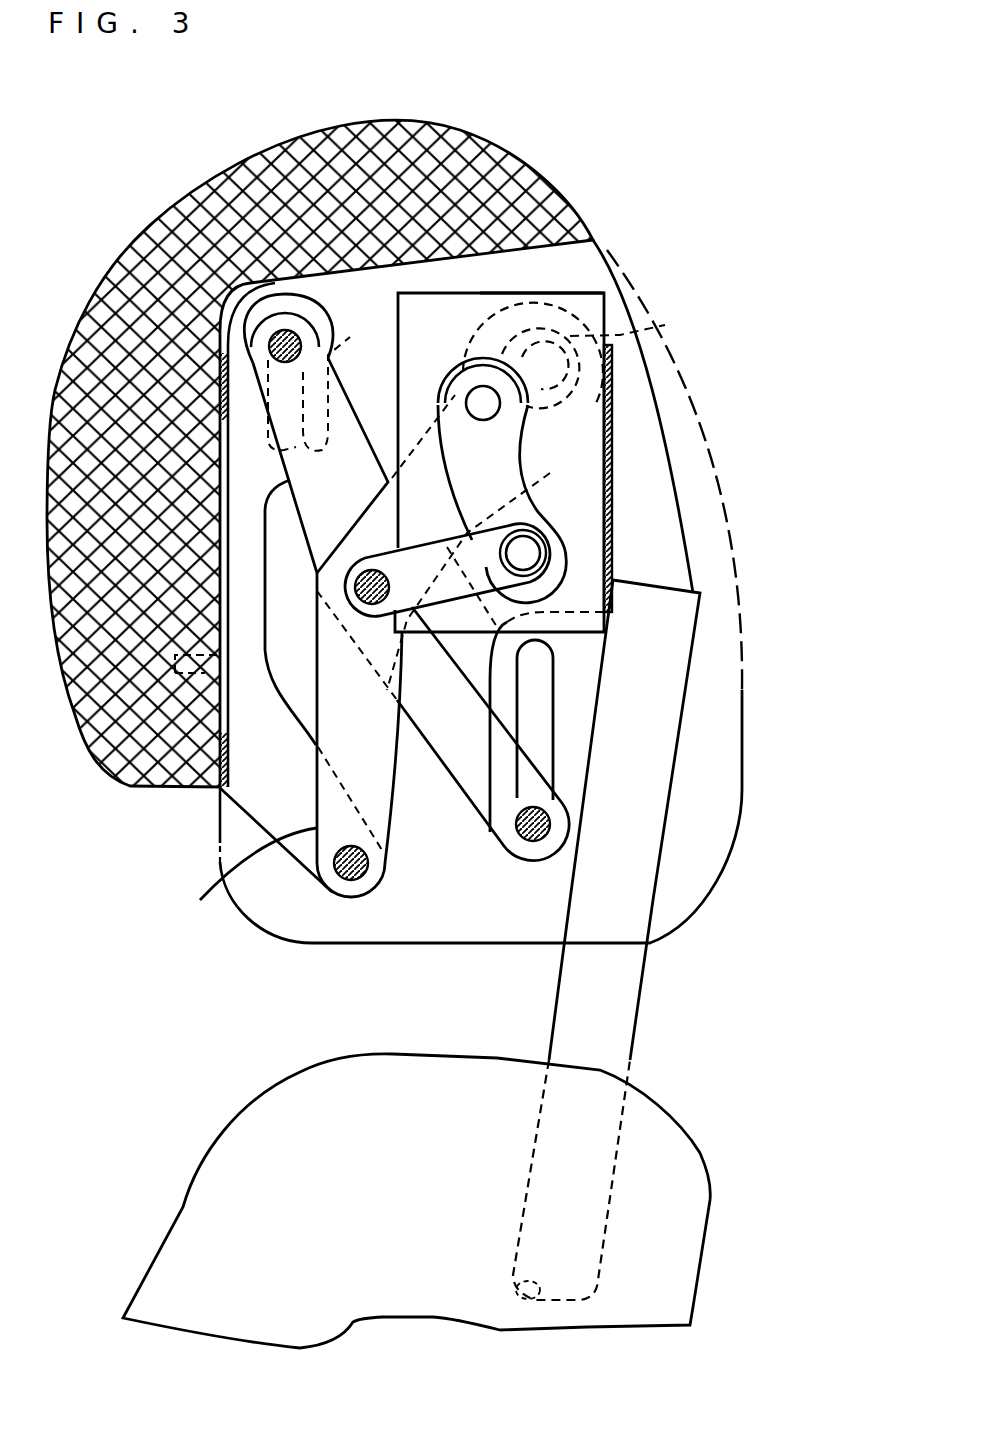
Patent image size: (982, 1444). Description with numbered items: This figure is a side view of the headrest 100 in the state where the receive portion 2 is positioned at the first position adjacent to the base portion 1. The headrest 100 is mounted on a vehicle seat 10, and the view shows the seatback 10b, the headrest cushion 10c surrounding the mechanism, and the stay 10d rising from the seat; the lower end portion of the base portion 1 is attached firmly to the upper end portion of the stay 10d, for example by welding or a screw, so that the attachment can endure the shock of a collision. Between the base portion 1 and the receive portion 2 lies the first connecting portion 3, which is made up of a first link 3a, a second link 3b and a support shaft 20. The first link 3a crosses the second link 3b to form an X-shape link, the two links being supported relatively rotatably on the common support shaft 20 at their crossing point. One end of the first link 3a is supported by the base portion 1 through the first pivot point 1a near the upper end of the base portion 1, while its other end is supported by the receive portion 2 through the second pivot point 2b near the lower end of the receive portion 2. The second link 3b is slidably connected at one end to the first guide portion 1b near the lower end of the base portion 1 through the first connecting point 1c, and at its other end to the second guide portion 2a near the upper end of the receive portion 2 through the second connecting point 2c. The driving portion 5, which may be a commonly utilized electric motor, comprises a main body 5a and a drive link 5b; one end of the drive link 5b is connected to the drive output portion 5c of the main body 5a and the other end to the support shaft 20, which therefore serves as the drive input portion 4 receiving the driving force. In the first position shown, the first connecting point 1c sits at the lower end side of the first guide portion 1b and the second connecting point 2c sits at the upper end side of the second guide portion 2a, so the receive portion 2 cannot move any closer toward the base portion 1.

The headrest 100 is at (610, 246).
The seat 10 is at (431, 729).
The headrest cushion 10c is at (147, 243).
The seatback 10b is at (217, 1145).
The stay 10d is at (622, 1022).
The base portion 1 is at (614, 427).
The first pivot point 1a is at (582, 353).
The first guide portion 1b is at (550, 730).
The first connecting point 1c is at (533, 842).
The receive portion 2 is at (245, 810).
The second guide portion 2a is at (326, 387).
The second pivot point 2b is at (337, 880).
The second connecting point 2c is at (283, 340).
The first connecting portion 3 is at (344, 636).
The first link 3a is at (233, 890).
The second link 3b is at (460, 765).
The drive input portion 4 is at (447, 617).
The support shaft 20 is at (400, 637).
The driving portion 5 is at (437, 293).
The main body 5a is at (567, 293).
The drive link 5b is at (507, 462).
The drive output portion 5c is at (481, 398).